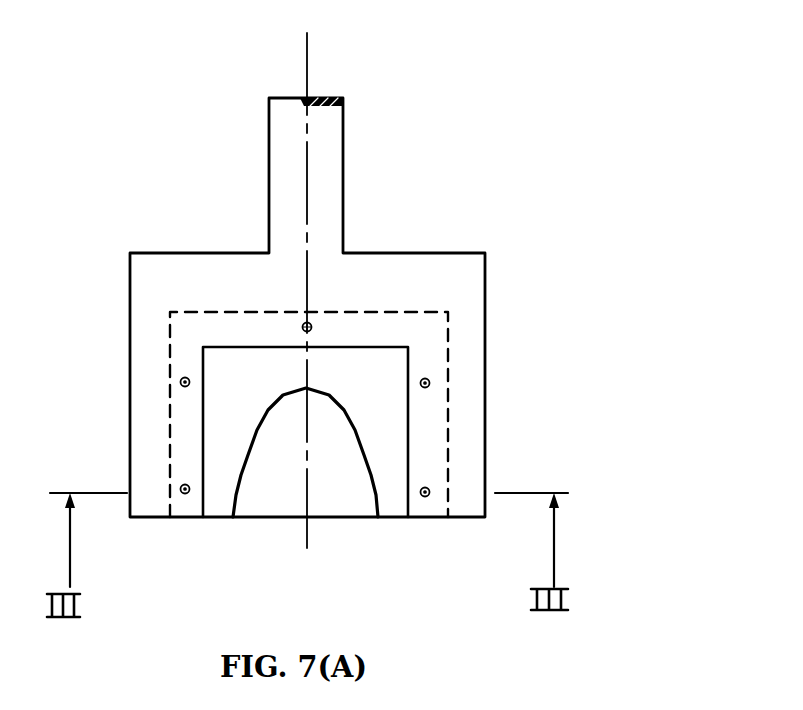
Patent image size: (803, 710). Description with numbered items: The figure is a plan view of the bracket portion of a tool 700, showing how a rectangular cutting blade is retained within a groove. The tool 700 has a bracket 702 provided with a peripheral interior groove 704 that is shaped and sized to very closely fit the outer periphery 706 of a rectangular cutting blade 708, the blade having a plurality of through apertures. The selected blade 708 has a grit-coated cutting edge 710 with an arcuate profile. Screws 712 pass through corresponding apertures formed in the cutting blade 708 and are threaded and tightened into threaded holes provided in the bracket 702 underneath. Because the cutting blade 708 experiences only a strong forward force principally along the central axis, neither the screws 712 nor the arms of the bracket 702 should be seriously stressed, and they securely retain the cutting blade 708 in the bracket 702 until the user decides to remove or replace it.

The tool 700 is at (365, 295).
The bracket 702 is at (188, 252).
The peripheral interior groove 704 is at (411, 414).
The outer periphery 706 is at (448, 437).
The cutting blade 708 is at (358, 387).
The grit-coated cutting edge 710 is at (248, 463).
The screws 712 is at (311, 327).